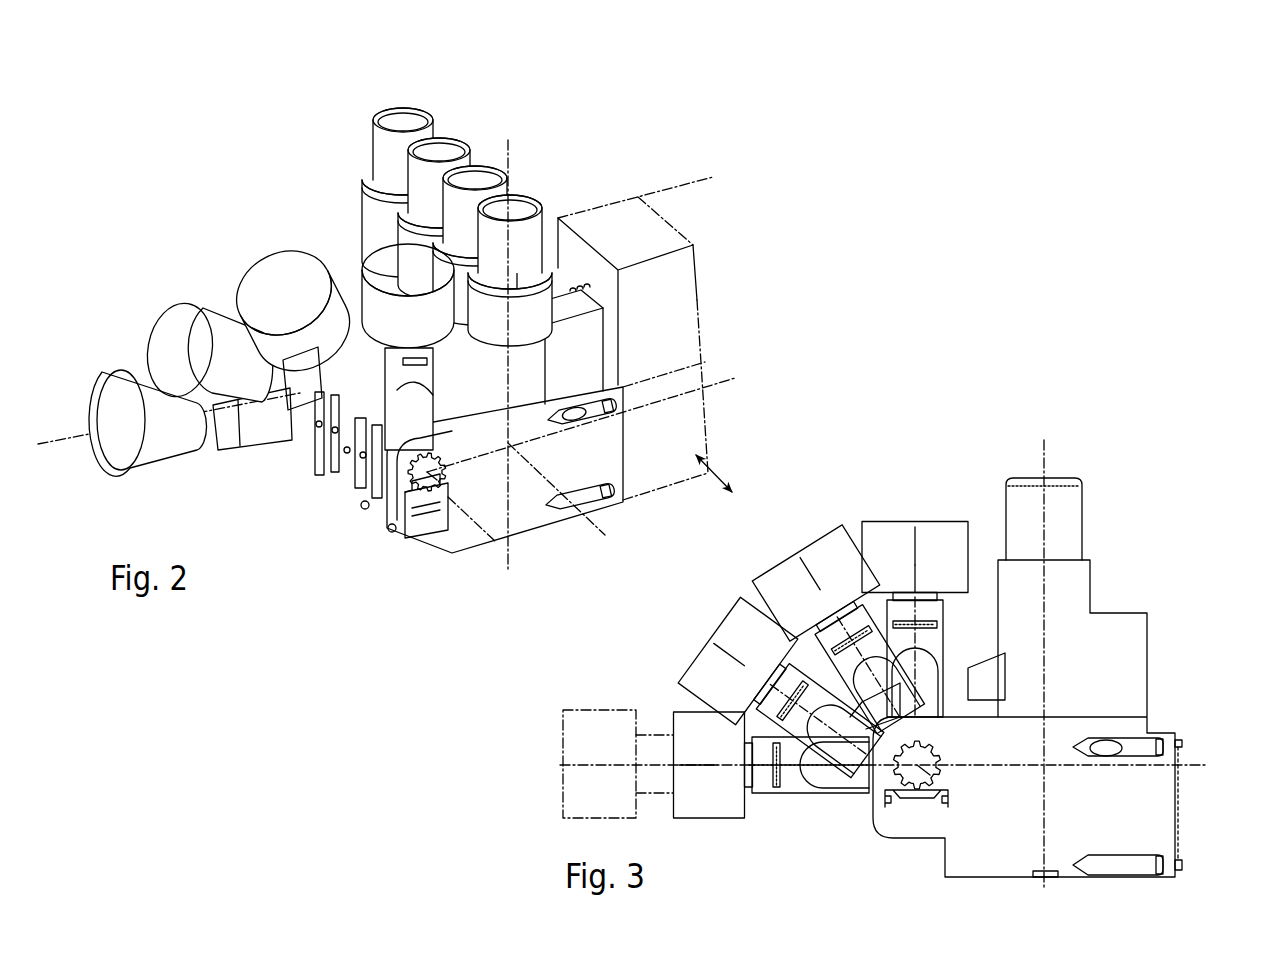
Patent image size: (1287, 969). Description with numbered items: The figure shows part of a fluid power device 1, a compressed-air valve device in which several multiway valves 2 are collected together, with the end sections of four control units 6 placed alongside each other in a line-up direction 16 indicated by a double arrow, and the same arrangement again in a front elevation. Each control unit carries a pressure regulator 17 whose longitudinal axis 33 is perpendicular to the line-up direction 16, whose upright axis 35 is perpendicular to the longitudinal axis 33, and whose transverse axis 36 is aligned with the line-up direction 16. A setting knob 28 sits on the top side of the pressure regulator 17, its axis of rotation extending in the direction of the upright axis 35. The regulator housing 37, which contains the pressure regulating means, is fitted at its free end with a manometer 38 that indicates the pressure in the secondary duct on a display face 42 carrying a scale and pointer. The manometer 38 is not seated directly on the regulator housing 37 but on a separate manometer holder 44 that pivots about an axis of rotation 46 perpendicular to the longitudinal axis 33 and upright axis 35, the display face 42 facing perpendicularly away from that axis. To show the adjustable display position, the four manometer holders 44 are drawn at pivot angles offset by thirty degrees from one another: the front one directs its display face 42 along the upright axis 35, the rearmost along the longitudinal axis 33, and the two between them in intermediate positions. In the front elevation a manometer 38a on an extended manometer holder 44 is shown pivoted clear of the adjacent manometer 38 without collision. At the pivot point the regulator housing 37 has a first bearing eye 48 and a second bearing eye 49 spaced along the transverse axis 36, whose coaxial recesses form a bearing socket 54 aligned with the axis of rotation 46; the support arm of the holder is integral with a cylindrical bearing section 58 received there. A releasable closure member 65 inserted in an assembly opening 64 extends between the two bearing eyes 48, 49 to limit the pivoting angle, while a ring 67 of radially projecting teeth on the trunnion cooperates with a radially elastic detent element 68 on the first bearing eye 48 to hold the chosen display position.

In FIG. 2, the fluid power device 1 is at (636, 174).
In FIG. 3, the fluid power device 1 is at (1073, 446).
In FIG. 2, the multiway valve 2 is at (620, 222).
In FIG. 2, the control unit 6 is at (664, 222).
In FIG. 2, the line-up direction 16 is at (714, 474).
In FIG. 2, the pressure regulator 17 is at (586, 340).
In FIG. 3, the pressure regulator 17 is at (1098, 642).
In FIG. 2, the setting knob 28 is at (483, 175).
In FIG. 3, the setting knob 28 is at (1072, 525).
In FIG. 2, the longitudinal axis 33 is at (60, 446).
In FIG. 2, the upright axis 35 is at (512, 150).
In FIG. 3, the upright axis 35 is at (1040, 451).
In FIG. 2, the transverse axis 36 is at (612, 531).
In FIG. 2, the regulator housing 37 is at (533, 505).
In FIG. 3, the regulator housing 37 is at (1157, 806).
In FIG. 2, the manometer 38 is at (308, 262).
In FIG. 3, the manometer 38 is at (880, 530).
In FIG. 3, the manometer 38a is at (612, 712).
In FIG. 2, the display face 42 is at (109, 401).
In FIG. 2, the manometer holder 44 is at (220, 425).
In FIG. 3, the manometer holder 44 is at (873, 656).
In FIG. 2, the axis of rotation 46 is at (482, 528).
In FIG. 3, the axis of rotation 46 is at (945, 778).
In FIG. 2, the first bearing eye 48 is at (388, 531).
In FIG. 2, the second bearing eye 49 is at (362, 504).
In FIG. 2, the bearing socket 54 is at (447, 476).
In FIG. 2, the bearing section 58 is at (450, 449).
In FIG. 2, the assembly opening 64 is at (416, 513).
In FIG. 2, the closure member 65 is at (421, 528).
In FIG. 3, the ring of teeth 67 is at (945, 754).
In FIG. 3, the detent element 68 is at (918, 798).